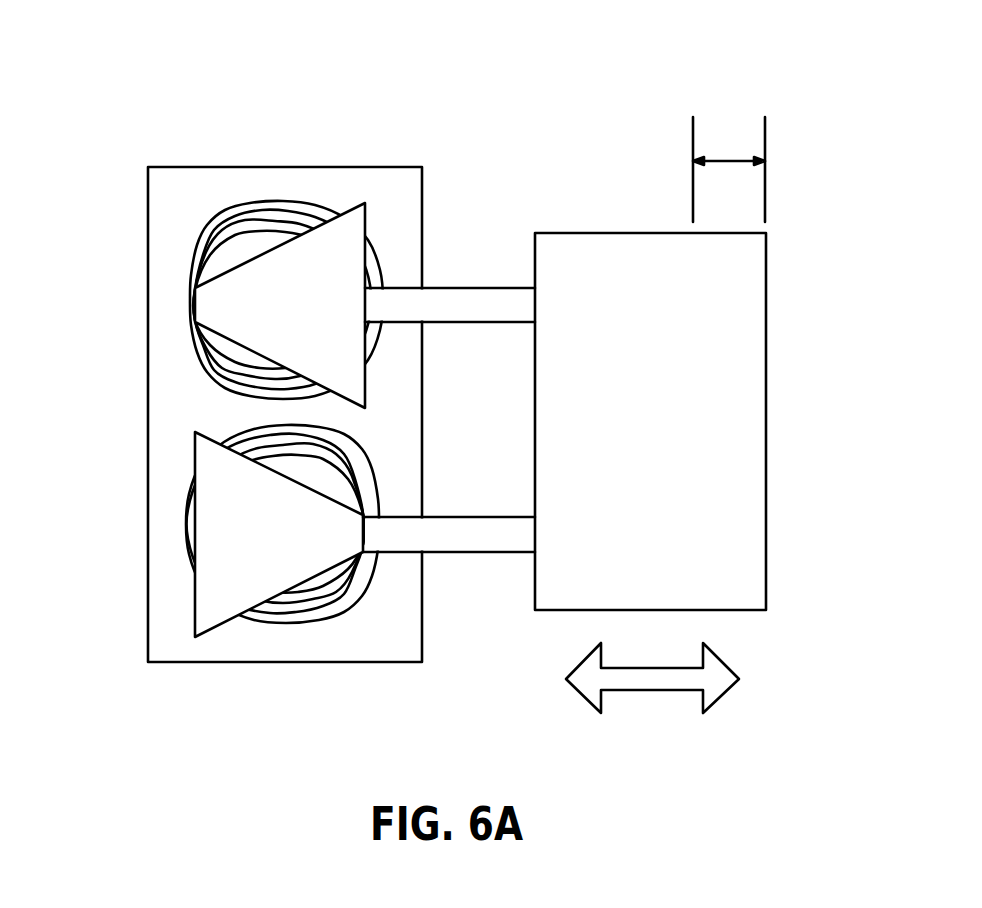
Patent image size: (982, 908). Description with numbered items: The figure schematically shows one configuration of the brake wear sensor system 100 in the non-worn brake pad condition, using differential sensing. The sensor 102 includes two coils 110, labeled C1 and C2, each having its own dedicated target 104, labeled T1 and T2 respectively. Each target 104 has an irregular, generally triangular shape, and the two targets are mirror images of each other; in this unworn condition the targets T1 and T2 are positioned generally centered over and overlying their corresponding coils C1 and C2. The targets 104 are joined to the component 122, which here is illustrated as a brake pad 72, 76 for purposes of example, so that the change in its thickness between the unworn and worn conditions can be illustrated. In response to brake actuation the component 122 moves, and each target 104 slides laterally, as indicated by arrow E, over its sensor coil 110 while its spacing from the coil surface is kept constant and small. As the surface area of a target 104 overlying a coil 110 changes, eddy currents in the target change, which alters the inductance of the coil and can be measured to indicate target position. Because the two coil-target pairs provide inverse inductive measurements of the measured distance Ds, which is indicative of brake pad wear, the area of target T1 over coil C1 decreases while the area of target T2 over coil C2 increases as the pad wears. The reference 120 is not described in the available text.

The sensor system 100 is at (463, 389).
The sensor 102 is at (463, 389).
The target 104 is at (211, 435).
The coil 110 is at (274, 358).
The transducer housing 120 is at (190, 230).
The component 122 is at (715, 303).
The brake pad holder 72 is at (703, 421).
The brake pad holder 76 is at (703, 421).
The first target T1 is at (253, 305).
The second target T2 is at (233, 522).
The first coil C1 is at (195, 263).
The second coil C2 is at (360, 460).
The measured distance Ds is at (729, 169).
The arrow indicating lateral movement E is at (646, 679).